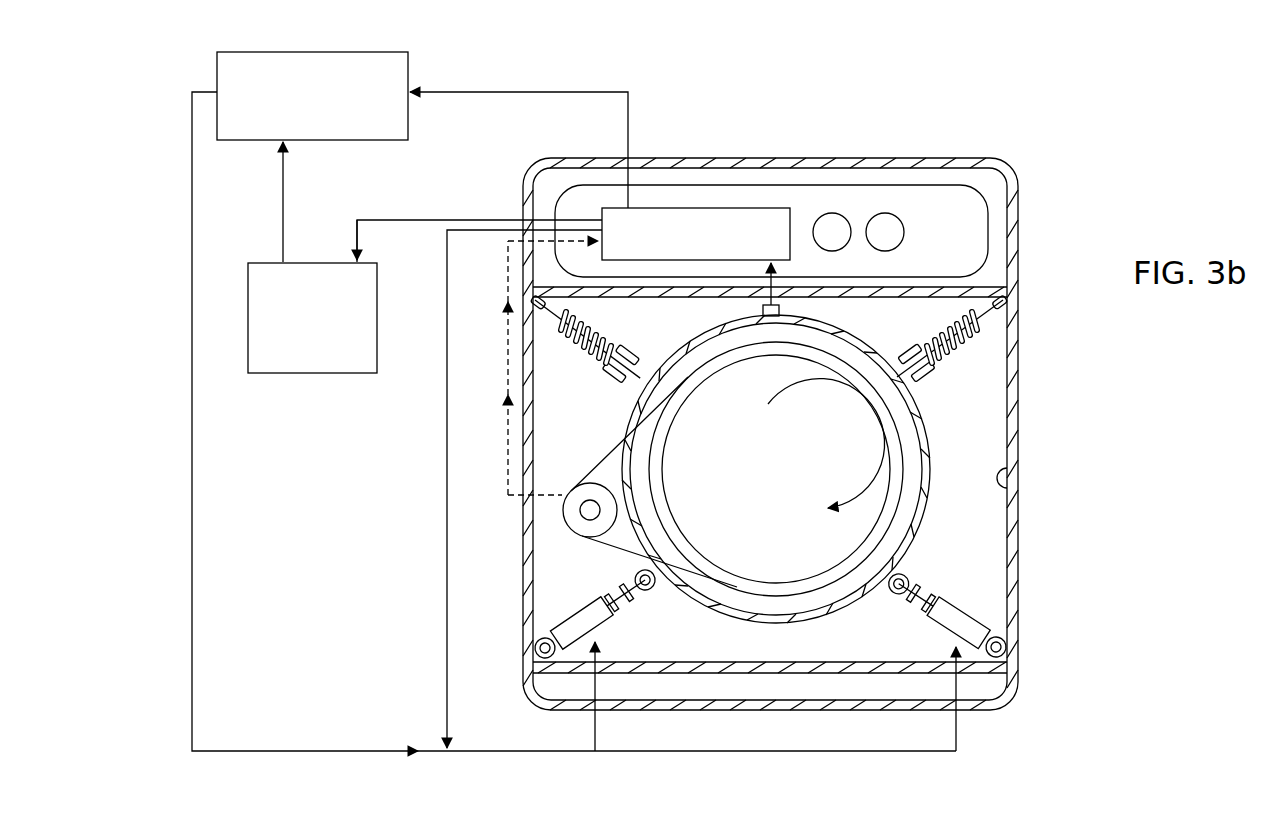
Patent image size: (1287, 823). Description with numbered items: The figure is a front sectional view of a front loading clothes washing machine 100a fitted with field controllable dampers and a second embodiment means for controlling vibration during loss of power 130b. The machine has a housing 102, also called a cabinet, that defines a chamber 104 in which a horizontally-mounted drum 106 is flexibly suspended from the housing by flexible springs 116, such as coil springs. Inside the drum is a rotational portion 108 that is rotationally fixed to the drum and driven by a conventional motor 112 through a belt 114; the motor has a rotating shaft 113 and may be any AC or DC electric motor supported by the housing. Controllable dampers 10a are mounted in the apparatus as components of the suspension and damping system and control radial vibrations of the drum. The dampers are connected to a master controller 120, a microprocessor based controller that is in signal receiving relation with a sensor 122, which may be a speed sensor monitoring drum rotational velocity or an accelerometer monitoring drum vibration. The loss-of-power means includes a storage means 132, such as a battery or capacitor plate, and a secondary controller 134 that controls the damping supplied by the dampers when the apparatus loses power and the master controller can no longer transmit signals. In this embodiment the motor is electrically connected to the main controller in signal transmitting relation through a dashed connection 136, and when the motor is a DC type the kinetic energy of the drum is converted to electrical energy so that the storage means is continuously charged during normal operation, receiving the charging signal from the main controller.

The front loading clothes washing machine 100a is at (1078, 180).
The housing 102 is at (1020, 592).
The chamber 104 is at (1012, 470).
The drum 106 is at (933, 460).
The rotational portion 108 is at (886, 428).
The controllable dampers 10a is at (600, 614).
The motor 112 is at (572, 513).
The rotating shaft 113 is at (592, 522).
The belt 114 is at (608, 457).
The flexible springs 116 is at (602, 337).
The master controller 120 is at (765, 207).
The sensor 122 is at (780, 304).
The means for controlling vibration during loss of power 130b is at (515, 540).
The storage means 132 is at (290, 376).
The secondary controller 134 is at (410, 62).
The connection 136 is at (508, 346).